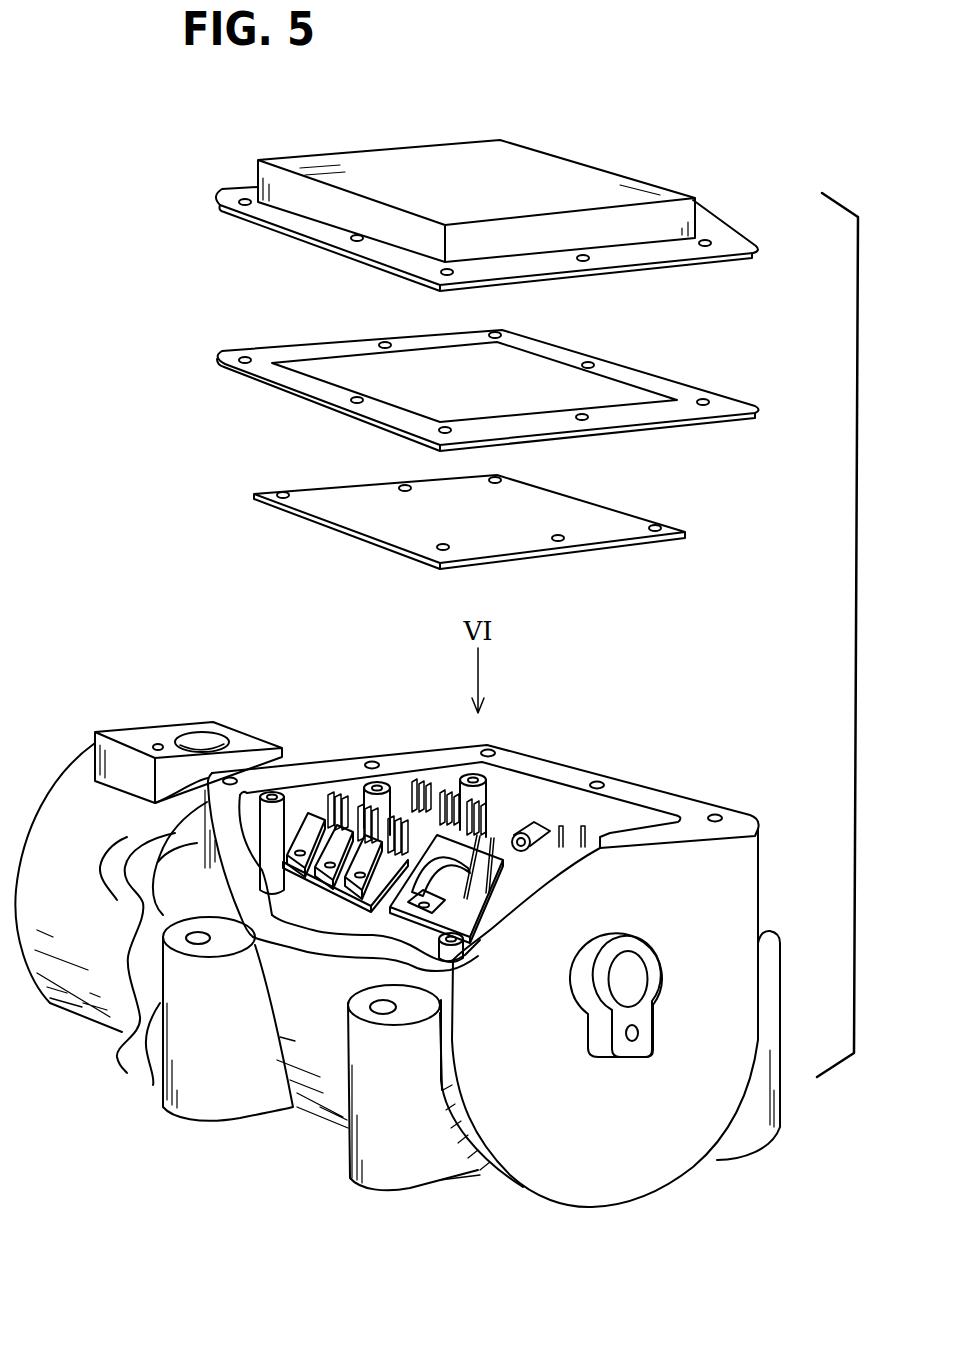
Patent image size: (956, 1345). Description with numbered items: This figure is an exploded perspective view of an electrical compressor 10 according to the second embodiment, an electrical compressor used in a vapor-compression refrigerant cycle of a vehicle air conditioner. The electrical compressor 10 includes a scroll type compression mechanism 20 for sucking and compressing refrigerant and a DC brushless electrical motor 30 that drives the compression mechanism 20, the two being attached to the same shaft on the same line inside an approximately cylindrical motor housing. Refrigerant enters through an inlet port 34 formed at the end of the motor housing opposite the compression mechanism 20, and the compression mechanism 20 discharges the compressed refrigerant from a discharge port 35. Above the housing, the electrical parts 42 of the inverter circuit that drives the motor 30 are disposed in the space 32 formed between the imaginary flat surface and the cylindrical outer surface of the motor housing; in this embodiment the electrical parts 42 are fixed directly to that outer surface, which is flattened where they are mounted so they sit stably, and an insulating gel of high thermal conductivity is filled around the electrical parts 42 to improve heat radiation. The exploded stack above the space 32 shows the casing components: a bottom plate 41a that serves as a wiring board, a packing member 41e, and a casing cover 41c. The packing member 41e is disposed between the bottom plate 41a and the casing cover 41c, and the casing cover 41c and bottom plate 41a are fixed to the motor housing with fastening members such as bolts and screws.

The electrical compressor 10 is at (459, 932).
The compression mechanism 20 is at (80, 990).
The electrical motor 30 is at (333, 1095).
The space 32 is at (548, 800).
The inlet port 34 is at (628, 978).
The discharge port 35 is at (202, 746).
The bottom plate 41a is at (578, 515).
The casing cover 41c is at (602, 182).
The packing member 41e is at (600, 368).
The electrical parts 42 is at (438, 877).